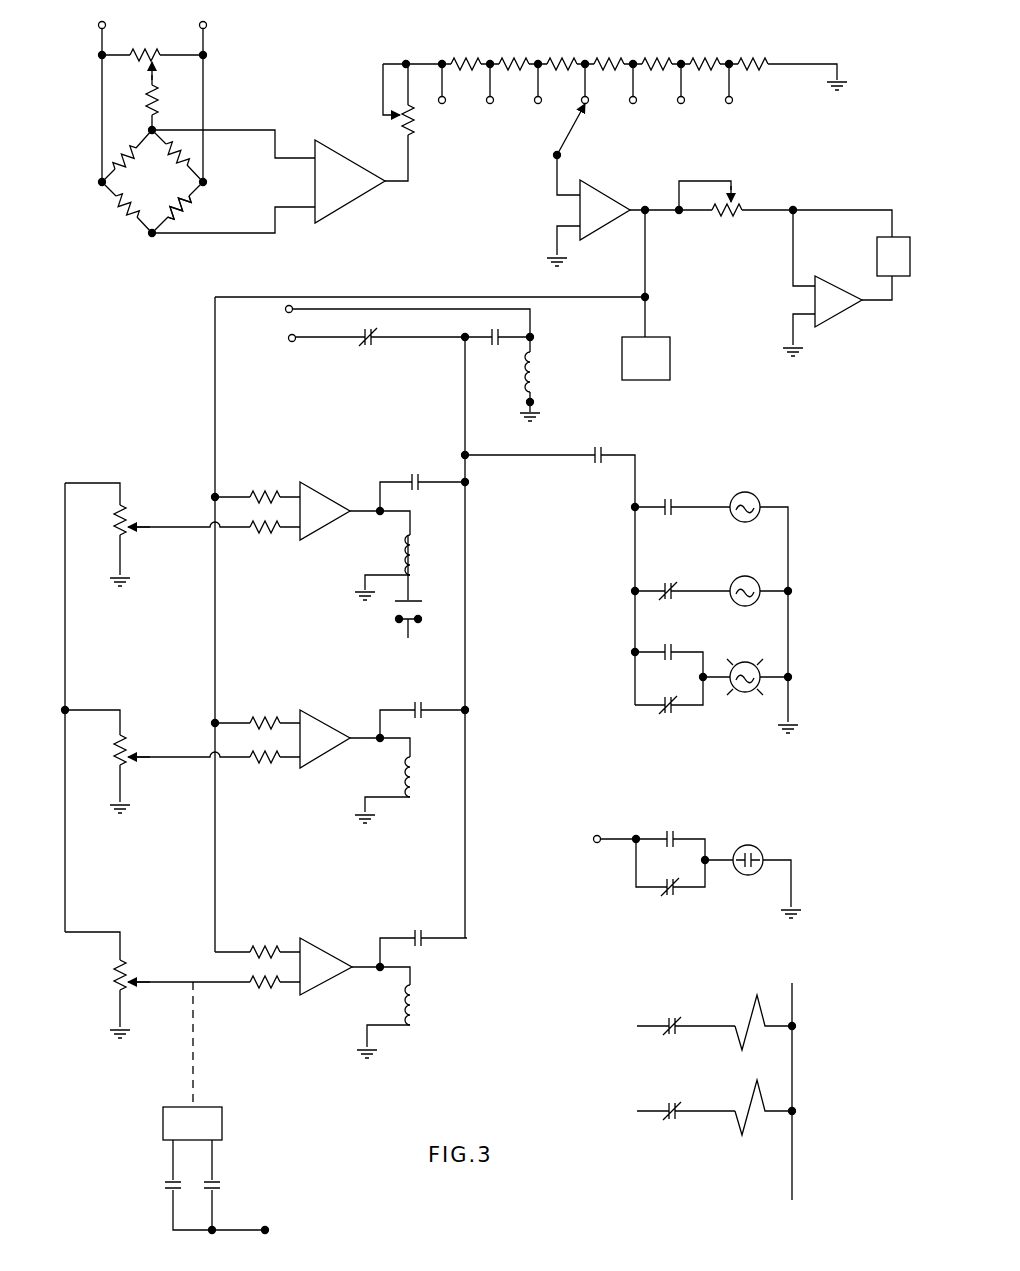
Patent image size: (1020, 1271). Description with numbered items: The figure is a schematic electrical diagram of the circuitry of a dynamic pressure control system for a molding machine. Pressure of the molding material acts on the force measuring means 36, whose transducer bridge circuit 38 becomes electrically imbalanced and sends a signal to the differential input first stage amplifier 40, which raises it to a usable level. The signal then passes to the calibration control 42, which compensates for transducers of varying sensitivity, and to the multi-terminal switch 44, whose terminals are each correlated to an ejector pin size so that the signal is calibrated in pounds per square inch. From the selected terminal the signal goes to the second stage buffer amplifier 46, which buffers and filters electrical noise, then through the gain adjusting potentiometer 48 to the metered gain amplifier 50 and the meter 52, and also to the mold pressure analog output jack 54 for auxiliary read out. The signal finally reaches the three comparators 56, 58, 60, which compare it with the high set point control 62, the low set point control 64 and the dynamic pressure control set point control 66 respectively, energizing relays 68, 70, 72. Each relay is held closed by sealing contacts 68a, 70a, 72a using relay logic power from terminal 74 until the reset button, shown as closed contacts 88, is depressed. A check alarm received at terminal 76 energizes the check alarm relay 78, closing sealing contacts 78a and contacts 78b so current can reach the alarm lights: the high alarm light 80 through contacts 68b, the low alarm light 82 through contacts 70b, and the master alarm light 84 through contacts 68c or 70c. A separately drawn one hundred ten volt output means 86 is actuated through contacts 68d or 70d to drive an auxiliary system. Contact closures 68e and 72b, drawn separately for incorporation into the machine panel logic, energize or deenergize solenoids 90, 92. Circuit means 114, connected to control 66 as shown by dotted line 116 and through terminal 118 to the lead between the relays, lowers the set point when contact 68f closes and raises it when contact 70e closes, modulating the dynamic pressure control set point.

The force measuring means 36 is at (99, 120).
The bridge circuit 38 is at (186, 196).
The first stage amplifier 40 is at (350, 181).
The calibration control 42 is at (418, 115).
The multi-terminal switch 44 is at (606, 58).
The second stage buffer amplifier 46 is at (605, 210).
The gain adjusting potentiometer 48 is at (728, 220).
The metered gain amplifier 50 is at (838, 301).
The meter 52 is at (875, 251).
The mold pressure analog output jack 54 is at (646, 358).
The comparator 56 is at (325, 511).
The comparator 58 is at (325, 739).
The comparator 60 is at (326, 966).
The control 62 is at (113, 530).
The control 64 is at (113, 760).
The control 66 is at (112, 980).
The relay 68 is at (416, 549).
The sealing contacts 68a is at (416, 471).
The contacts 68b is at (668, 493).
The contacts 68c is at (670, 640).
The contacts 68d is at (671, 826).
The contacts 68e is at (668, 1014).
The contact 68f is at (162, 1188).
The relay 70 is at (420, 778).
The sealing contacts 70a is at (418, 699).
The contacts 70b is at (672, 579).
The contacts 70c is at (672, 718).
The contacts 70d is at (670, 904).
The contact 70e is at (218, 1187).
The relay 72 is at (421, 1002).
The sealing contacts 72a is at (418, 926).
The contacts 72b is at (670, 1099).
The terminal 74 is at (288, 341).
The terminal 76 is at (285, 311).
The check alarm relay 78 is at (523, 372).
The sealing contacts 78a is at (490, 330).
The contacts 78b is at (596, 476).
The alarm light 80 is at (752, 490).
The low alarm light 82 is at (753, 575).
The master alarm light 84 is at (753, 660).
The 110-volt output means 86 is at (757, 845).
The closed contacts 88 is at (373, 348).
The solenoid 90 is at (746, 1009).
The solenoid 92 is at (744, 1100).
The circuit means 114 is at (192, 1123).
The dotted line 116 is at (196, 1050).
The terminal 118 is at (267, 1231).